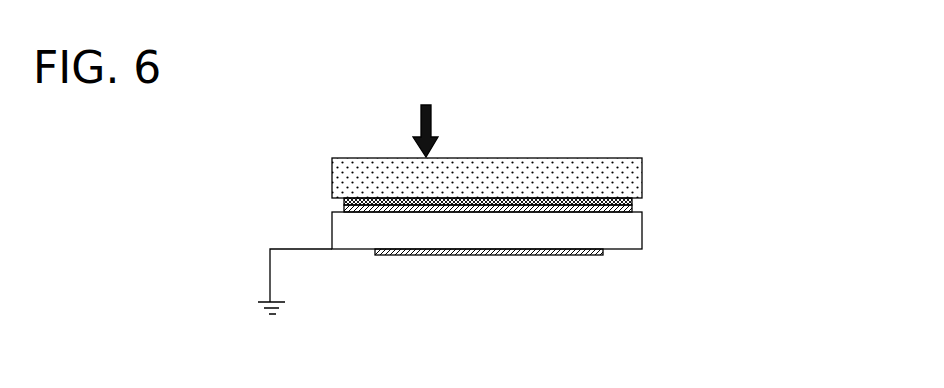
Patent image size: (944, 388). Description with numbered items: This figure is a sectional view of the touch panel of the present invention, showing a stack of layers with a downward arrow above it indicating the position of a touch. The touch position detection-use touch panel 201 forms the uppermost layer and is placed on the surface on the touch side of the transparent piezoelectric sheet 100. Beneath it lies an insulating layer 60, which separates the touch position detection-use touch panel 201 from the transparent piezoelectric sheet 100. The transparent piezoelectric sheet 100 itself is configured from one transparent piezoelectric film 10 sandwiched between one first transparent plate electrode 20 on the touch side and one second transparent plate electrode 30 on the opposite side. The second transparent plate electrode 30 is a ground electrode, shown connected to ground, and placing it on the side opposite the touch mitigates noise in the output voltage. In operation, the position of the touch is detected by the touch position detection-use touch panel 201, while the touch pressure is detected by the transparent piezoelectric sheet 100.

The touch position detection-use touch panel 201 is at (553, 165).
The insulating layer 60 is at (632, 201).
The first transparent plate electrode 20 is at (632, 208).
The transparent piezoelectric film 10 is at (625, 228).
The second transparent plate electrode 30 is at (560, 245).
The transparent piezoelectric sheet 100 is at (582, 209).